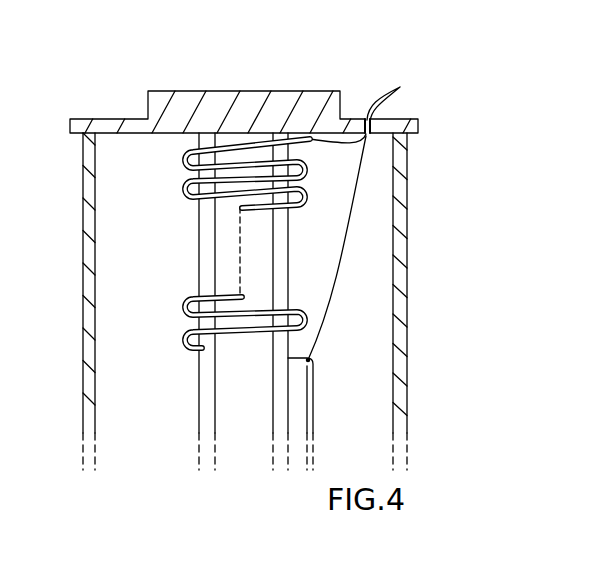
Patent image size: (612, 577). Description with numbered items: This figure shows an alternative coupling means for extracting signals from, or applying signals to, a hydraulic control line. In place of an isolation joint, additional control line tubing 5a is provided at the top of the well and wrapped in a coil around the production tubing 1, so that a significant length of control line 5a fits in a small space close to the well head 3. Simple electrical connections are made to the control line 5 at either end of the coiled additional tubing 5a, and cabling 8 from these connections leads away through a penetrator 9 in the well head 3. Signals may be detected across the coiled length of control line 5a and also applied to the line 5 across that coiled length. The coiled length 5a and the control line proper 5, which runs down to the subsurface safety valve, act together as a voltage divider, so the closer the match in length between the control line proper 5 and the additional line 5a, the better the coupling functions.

The production tubing 1 is at (205, 383).
The well head 3 is at (190, 97).
The control line 5 is at (313, 393).
The additional control line tubing 5a is at (190, 188).
The cabling 8 is at (382, 103).
The penetrator 9 is at (368, 119).